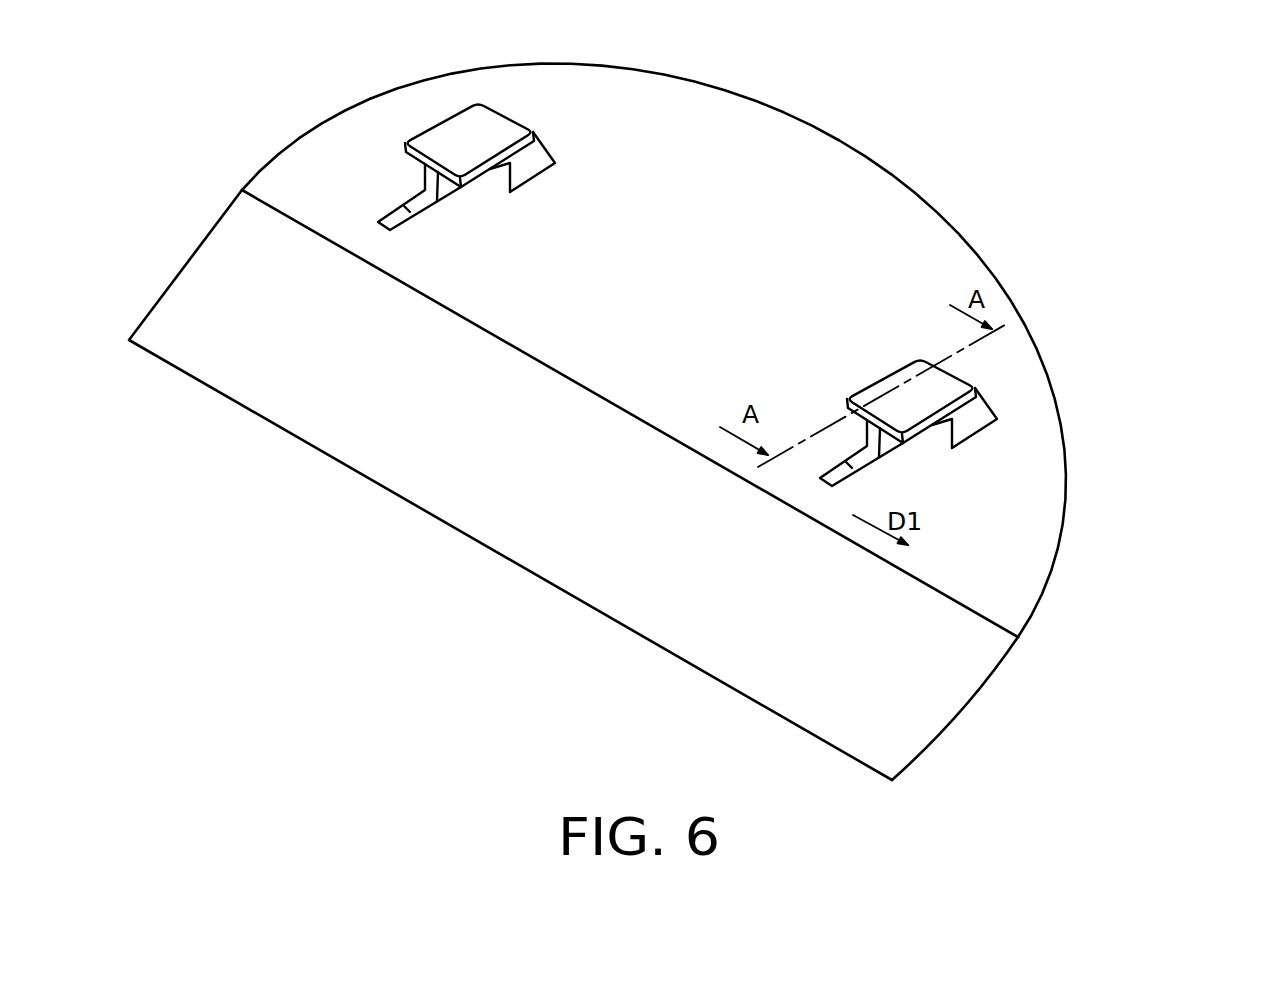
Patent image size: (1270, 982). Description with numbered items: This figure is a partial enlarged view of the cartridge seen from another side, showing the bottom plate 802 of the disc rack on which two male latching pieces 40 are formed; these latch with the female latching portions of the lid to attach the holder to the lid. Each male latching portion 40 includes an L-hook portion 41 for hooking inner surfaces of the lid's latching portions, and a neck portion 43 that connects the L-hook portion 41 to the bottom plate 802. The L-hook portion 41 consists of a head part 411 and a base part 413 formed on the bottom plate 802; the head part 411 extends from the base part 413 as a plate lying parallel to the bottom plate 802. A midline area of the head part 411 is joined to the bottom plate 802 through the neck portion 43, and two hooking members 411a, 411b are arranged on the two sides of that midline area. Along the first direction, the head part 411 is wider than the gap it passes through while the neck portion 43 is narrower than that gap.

The bottom plate 802 is at (732, 163).
The male latching piece 40 is at (447, 145).
The L-hook portion 41 is at (1044, 435).
The head part 411 is at (1027, 339).
The hooking member 411a is at (855, 403).
The hooking member 411b is at (905, 423).
The base part 413 is at (975, 425).
The neck portion 43 is at (887, 450).